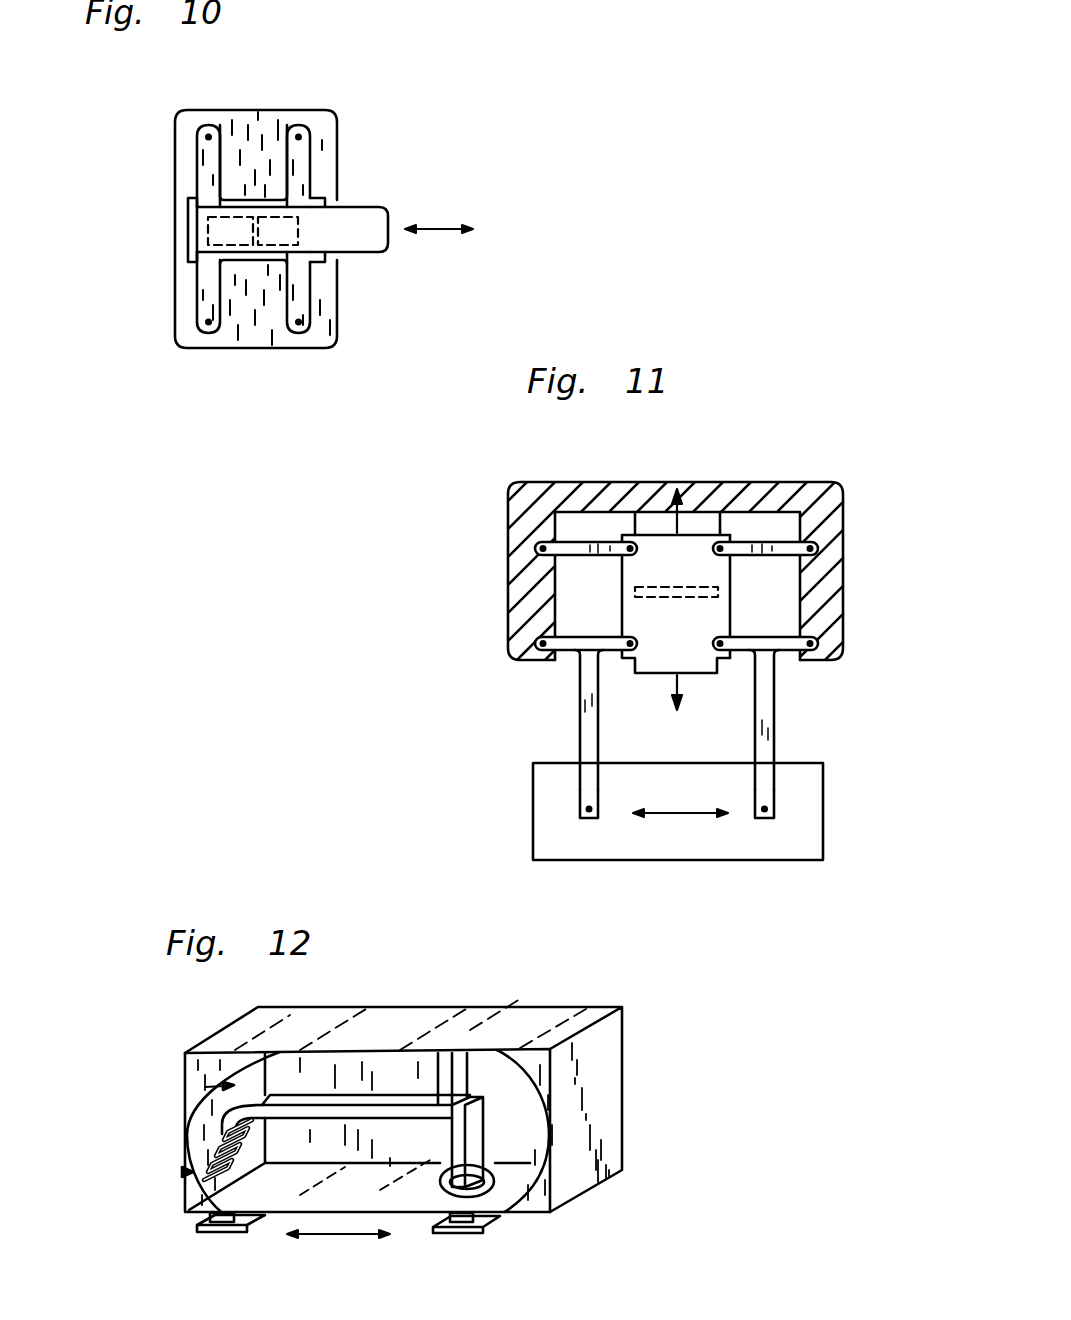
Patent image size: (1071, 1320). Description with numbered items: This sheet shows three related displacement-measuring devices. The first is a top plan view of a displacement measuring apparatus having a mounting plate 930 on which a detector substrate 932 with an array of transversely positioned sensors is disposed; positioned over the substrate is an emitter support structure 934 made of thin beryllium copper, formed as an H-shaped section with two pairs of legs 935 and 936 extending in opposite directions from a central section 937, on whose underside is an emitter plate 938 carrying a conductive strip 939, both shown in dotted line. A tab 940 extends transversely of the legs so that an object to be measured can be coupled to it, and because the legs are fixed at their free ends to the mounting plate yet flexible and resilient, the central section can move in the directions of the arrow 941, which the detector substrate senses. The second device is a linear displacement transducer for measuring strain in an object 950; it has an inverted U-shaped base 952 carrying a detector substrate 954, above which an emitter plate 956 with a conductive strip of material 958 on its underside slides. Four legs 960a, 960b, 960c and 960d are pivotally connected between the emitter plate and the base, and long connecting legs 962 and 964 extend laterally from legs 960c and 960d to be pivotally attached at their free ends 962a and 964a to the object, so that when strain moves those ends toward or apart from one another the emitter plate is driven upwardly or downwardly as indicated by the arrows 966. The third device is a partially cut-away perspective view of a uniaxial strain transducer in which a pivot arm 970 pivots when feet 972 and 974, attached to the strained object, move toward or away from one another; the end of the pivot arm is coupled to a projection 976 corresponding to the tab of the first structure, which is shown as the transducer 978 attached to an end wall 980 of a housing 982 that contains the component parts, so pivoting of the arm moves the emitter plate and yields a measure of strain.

In FIG. 10, the mounting plate 930 is at (187, 139).
In FIG. 10, the detector substrate 932 is at (193, 257).
In FIG. 10, the emitter support structure 934 is at (356, 201).
In FIG. 10, the legs 935 is at (290, 151).
In FIG. 10, the legs 936 is at (215, 273).
In FIG. 10, the central section 937 is at (307, 246).
In FIG. 10, the emitter plate 938 is at (208, 238).
In FIG. 10, the conductive strip 939 is at (250, 231).
In FIG. 10, the tab 940 is at (365, 239).
In FIG. 10, the arrow 941 is at (440, 228).
In FIG. 11, the object 950 is at (803, 838).
In FIG. 11, the base 952 is at (832, 592).
In FIG. 11, the detector substrate 954 is at (702, 523).
In FIG. 11, the emitter plate 956 is at (733, 572).
In FIG. 11, the conductive strip of material 958 is at (693, 597).
In FIG. 11, the leg 960a is at (603, 545).
In FIG. 11, the leg 960b is at (783, 543).
In FIG. 11, the leg 960c is at (570, 653).
In FIG. 11, the leg 960d is at (790, 655).
In FIG. 11, the connecting leg 962 is at (598, 746).
In FIG. 11, the free end 962a is at (580, 810).
In FIG. 11, the connecting leg 964 is at (775, 745).
In FIG. 11, the free end 964a is at (775, 805).
In FIG. 11, the arrows 966 is at (680, 533).
In FIG. 12, the pivot arm 970 is at (378, 1105).
In FIG. 12, the foot 972 is at (224, 1240).
In FIG. 12, the foot 974 is at (466, 1240).
In FIG. 12, the projection 976 is at (235, 1135).
In FIG. 12, the transducer 978 is at (183, 1173).
In FIG. 12, the end wall 980 is at (205, 1087).
In FIG. 12, the housing 982 is at (608, 1050).